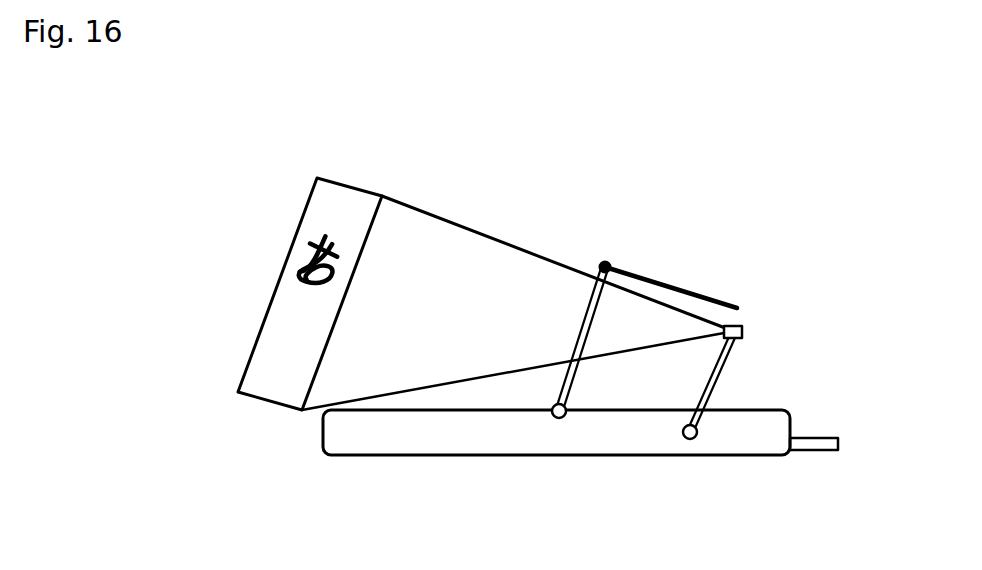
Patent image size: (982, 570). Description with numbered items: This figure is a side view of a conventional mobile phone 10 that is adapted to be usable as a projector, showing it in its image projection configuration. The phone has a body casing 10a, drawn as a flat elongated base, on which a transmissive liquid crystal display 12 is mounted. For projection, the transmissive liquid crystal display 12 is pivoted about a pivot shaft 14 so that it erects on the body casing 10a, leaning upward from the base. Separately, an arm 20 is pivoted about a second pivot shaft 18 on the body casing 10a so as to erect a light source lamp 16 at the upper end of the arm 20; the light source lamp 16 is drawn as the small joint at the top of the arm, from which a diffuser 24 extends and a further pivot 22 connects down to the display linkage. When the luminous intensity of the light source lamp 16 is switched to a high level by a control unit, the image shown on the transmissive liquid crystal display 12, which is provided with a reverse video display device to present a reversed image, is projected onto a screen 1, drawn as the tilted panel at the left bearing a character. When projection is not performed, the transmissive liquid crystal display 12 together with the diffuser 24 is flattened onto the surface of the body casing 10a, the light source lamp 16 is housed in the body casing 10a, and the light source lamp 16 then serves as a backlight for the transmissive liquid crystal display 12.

The screen 1 is at (313, 202).
The mobile phone 10 is at (417, 479).
The body casing 10a is at (755, 458).
The transmissive liquid crystal display 12 is at (572, 380).
The pivot shaft 14 is at (560, 420).
The light source lamp 16 is at (744, 333).
The pivot shaft 18 is at (690, 441).
The arm 20 is at (725, 378).
The pivot pin 22 is at (606, 261).
The diffuser 24 is at (711, 300).